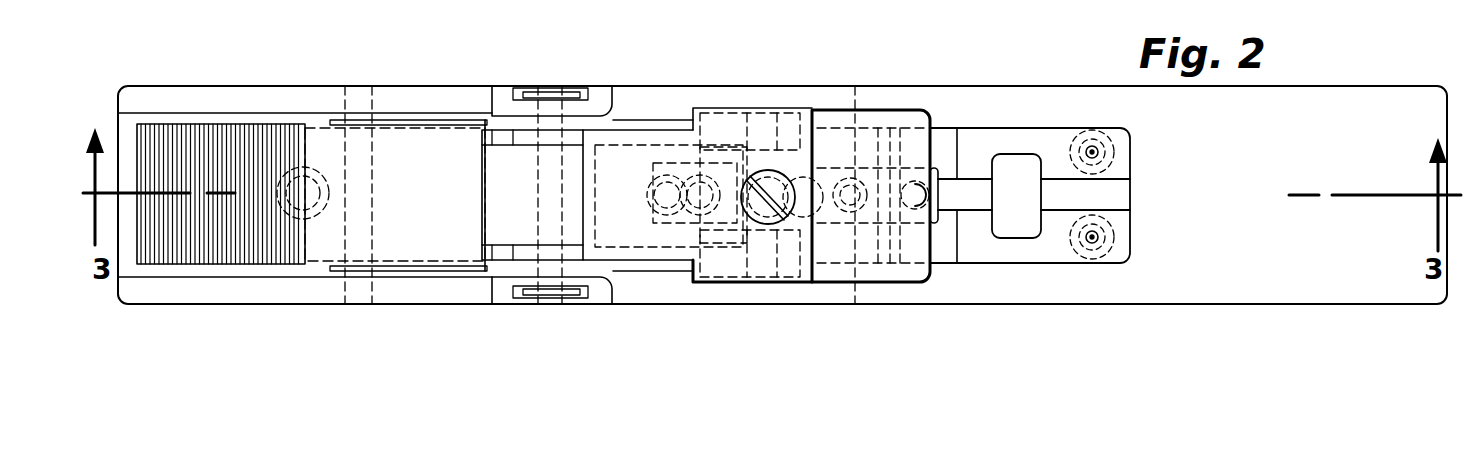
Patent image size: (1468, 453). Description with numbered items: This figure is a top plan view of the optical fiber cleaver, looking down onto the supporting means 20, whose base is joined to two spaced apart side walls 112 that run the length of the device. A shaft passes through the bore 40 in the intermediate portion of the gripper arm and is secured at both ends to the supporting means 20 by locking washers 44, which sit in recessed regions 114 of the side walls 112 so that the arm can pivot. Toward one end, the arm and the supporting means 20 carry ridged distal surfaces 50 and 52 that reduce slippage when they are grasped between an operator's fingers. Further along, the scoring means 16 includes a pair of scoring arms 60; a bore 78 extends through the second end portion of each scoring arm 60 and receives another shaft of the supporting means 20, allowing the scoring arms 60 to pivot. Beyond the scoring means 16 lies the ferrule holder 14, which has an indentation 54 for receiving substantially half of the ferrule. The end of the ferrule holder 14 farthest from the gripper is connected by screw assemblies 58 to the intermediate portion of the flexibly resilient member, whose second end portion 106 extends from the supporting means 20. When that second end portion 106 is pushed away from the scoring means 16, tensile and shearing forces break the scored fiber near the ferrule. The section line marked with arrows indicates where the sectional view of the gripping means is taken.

The ferrule holder 14 is at (1006, 100).
The scoring means 16 is at (887, 78).
The supporting means 20 is at (514, 0).
The bore 40 is at (542, 165).
The locking washers 44 is at (580, 86).
The distal surface 50 is at (219, 138).
The distal surface 52 is at (255, 0).
The indentation 54 is at (1013, 240).
The screw assemblies 58 is at (1115, 151).
The scoring arms 60 is at (662, 120).
The bore 78 is at (368, 167).
The second end portion 106 is at (1386, 160).
The side walls 112 is at (433, 86).
The recessed regions 114 is at (535, 68).